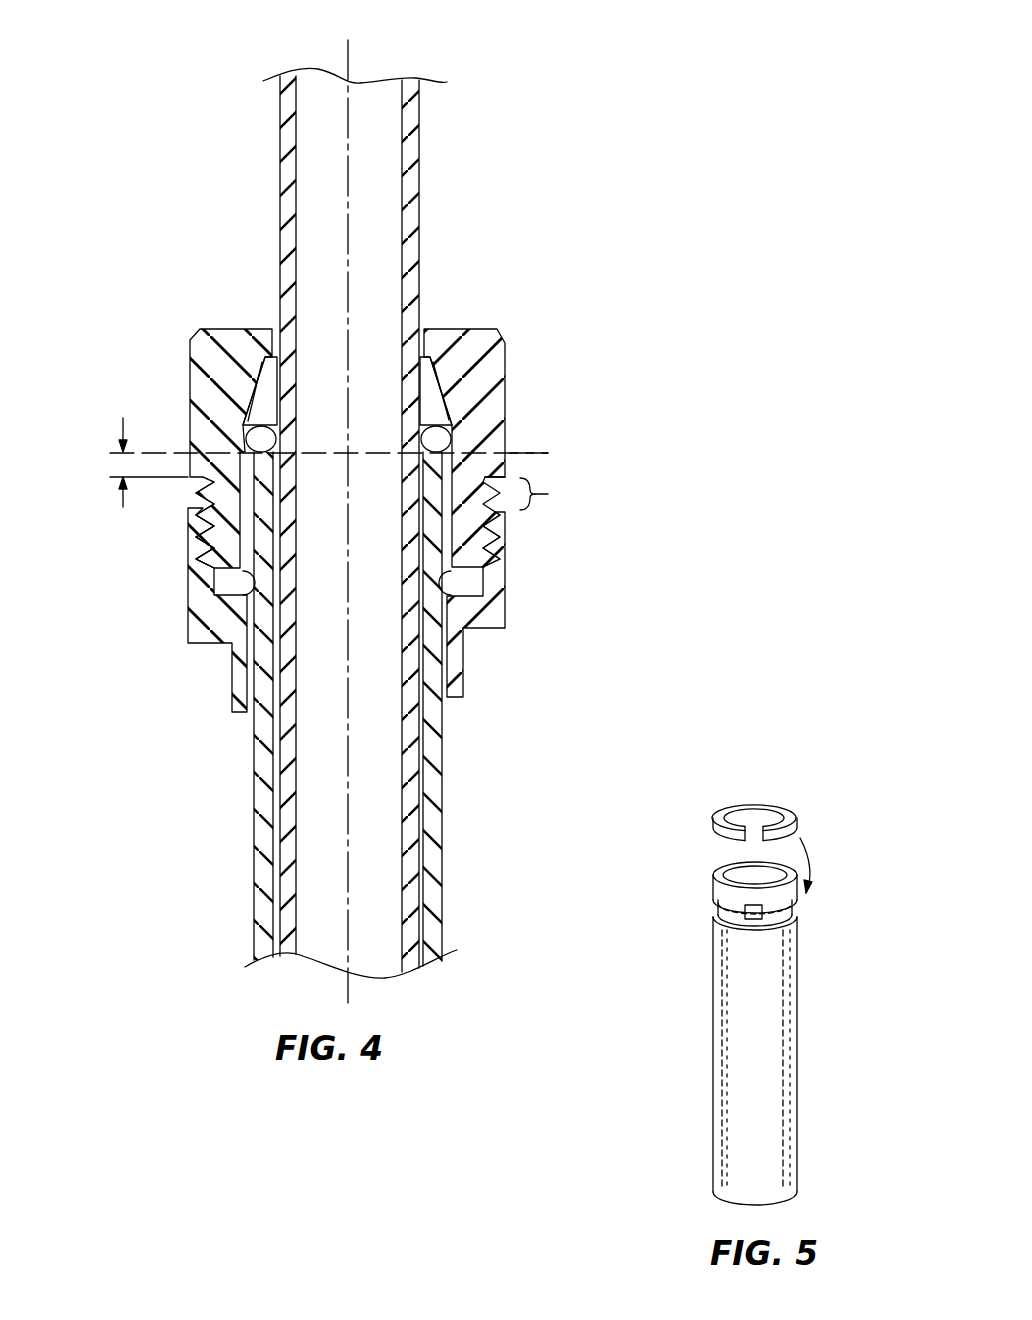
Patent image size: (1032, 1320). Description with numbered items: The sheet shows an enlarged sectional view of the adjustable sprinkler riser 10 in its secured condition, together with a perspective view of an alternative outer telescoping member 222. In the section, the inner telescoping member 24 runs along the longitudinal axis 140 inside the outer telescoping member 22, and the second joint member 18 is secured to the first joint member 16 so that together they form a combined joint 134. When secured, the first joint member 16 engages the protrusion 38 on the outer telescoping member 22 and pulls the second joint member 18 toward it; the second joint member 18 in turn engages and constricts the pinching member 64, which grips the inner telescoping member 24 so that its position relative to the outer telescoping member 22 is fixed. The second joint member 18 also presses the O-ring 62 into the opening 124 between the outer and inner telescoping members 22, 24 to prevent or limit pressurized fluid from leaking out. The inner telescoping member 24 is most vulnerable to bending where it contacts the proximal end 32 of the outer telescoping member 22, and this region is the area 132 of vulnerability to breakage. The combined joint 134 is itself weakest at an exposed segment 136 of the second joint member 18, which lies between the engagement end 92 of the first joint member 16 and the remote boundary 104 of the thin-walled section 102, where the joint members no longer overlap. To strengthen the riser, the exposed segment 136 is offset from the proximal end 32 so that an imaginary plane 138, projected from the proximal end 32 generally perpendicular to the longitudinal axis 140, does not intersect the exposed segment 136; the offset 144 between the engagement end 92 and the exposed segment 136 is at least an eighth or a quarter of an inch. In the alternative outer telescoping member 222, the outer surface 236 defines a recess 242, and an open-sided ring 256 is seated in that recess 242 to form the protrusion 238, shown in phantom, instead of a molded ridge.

In FIG. 4, the adjustable sprinkler riser 10 is at (237, 115).
In FIG. 4, the longitudinal axis 140 is at (350, 63).
In FIG. 4, the inner telescoping member 24 is at (288, 173).
In FIG. 4, the outer telescoping member 22 is at (440, 800).
In FIG. 4, the second joint member 18 is at (223, 340).
In FIG. 4, the O-ring 62 is at (243, 432).
In FIG. 4, the area of vulnerability to breakage 132 is at (272, 456).
In FIG. 4, the first joint member 16 is at (203, 645).
In FIG. 4, the proximal end 32 is at (206, 488).
In FIG. 4, the protrusion 38 is at (241, 576).
In FIG. 4, the offset 144 is at (120, 463).
In FIG. 4, the pinching member 64 is at (432, 383).
In FIG. 4, the opening 124 is at (422, 454).
In FIG. 4, the engagement end 92 is at (493, 522).
In FIG. 4, the thin-walled section 102 is at (480, 552).
In FIG. 4, the combined joint 134 is at (570, 412).
In FIG. 4, the imaginary plane 138 is at (533, 450).
In FIG. 4, the remote boundary 104 is at (520, 478).
In FIG. 4, the exposed segment 136 is at (555, 492).
In FIG. 5, the open-sided ring 256 is at (788, 803).
In FIG. 5, the outer telescoping member 222 is at (740, 1040).
In FIG. 5, the protrusion 238 is at (710, 905).
In FIG. 5, the recess 242 is at (757, 918).
In FIG. 5, the outer surface 236 is at (760, 1095).